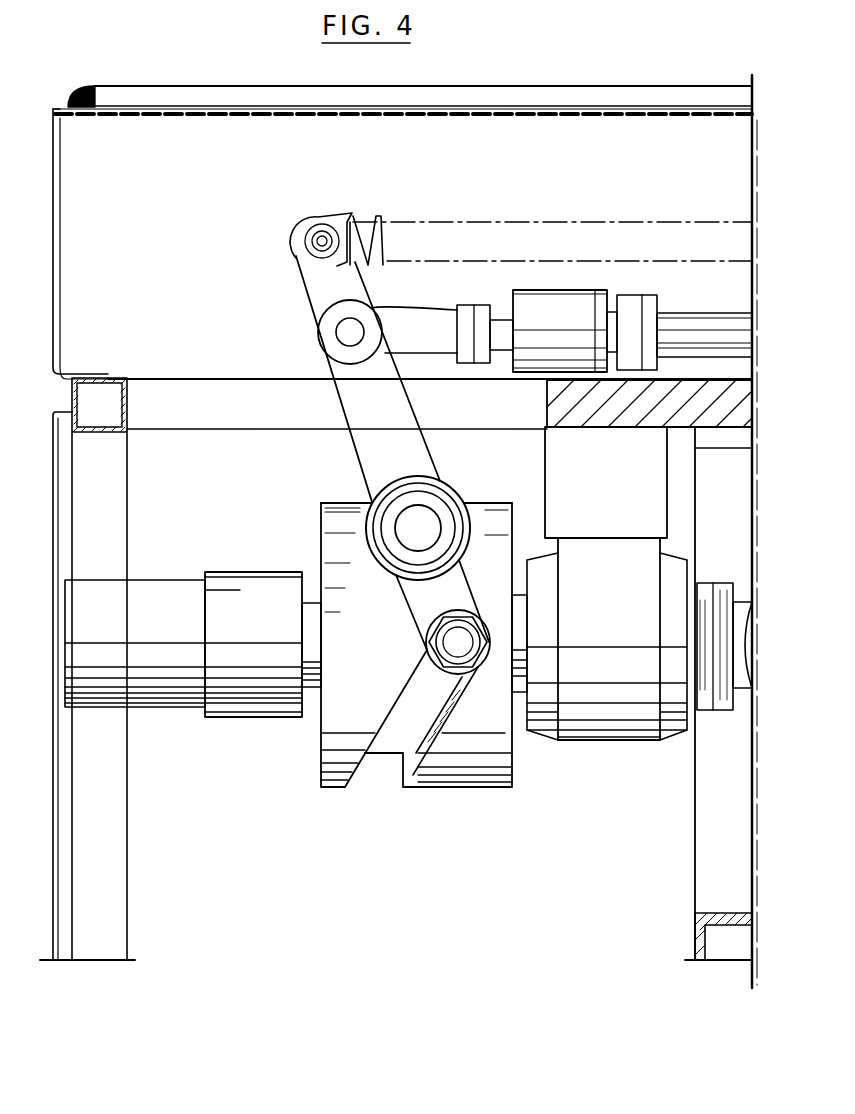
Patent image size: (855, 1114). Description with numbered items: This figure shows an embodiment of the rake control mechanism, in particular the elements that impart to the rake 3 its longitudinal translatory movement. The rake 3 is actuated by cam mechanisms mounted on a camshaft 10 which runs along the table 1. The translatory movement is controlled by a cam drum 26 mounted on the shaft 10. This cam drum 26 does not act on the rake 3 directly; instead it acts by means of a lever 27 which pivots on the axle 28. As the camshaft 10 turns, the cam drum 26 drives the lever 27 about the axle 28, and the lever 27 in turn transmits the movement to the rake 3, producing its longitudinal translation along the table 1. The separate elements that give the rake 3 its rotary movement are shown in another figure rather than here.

The table 1 is at (547, 403).
The rake 3 is at (693, 325).
The camshaft 10 is at (518, 700).
The cam drum 26 is at (388, 756).
The lever 27 is at (378, 462).
The axle 28 is at (402, 528).